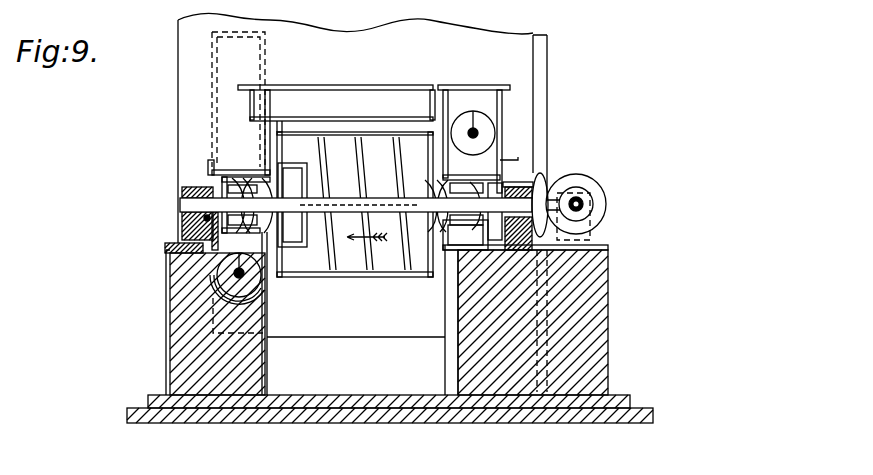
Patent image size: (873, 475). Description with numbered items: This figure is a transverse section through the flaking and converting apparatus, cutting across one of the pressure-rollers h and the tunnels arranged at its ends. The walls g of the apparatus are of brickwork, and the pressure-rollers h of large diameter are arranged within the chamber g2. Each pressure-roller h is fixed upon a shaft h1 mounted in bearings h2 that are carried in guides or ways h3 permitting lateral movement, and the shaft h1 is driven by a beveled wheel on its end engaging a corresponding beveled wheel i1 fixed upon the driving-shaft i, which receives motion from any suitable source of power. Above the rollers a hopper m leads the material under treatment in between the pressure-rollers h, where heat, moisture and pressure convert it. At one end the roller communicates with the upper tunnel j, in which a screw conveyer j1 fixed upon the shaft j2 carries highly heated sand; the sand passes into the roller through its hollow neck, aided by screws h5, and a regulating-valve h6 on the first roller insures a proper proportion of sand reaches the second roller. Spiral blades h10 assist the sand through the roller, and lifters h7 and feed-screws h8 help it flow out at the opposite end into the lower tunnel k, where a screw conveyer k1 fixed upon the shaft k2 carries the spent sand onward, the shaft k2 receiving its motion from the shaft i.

The walls of the apparatus g is at (490, 448).
The chamber g2 is at (267, 137).
The hopper m is at (432, 128).
The upper tunnel j is at (500, 117).
The screw conveyer j1 is at (473, 133).
The shaft j2 is at (500, 113).
The pressure-rollers h is at (278, 143).
The shafts h1 is at (180, 203).
The bearings h2 is at (180, 217).
The guides or ways h3 is at (187, 187).
The screws h5 is at (503, 173).
The regulating-valve h6 is at (500, 182).
The lifters h7 is at (288, 170).
The feed-screws h8 is at (322, 262).
The spiral blades h10 is at (367, 278).
The driving-shaft i is at (583, 205).
The beveled wheels i1 is at (606, 193).
The lower tunnel k is at (250, 232).
The screw conveyer k1 is at (237, 268).
The shaft k2 is at (175, 332).